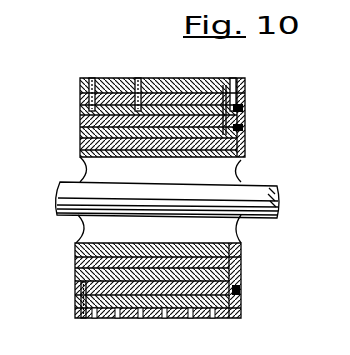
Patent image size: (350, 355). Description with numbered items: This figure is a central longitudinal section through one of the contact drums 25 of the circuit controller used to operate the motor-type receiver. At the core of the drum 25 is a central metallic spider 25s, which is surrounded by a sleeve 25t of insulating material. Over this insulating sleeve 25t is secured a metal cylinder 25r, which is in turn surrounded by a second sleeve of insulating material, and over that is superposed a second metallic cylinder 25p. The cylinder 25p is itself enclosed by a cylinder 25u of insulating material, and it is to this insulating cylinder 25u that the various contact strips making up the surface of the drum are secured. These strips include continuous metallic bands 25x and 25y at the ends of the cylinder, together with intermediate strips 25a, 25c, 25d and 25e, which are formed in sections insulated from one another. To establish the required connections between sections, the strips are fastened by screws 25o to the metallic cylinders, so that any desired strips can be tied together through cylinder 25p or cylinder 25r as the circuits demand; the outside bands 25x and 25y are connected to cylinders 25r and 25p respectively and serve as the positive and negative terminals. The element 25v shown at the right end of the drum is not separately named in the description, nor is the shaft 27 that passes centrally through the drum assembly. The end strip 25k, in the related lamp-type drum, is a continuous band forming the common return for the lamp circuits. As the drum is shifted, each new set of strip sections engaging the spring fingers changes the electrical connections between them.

The contact drum 25 is at (176, 280).
The intermediate contact strip 25a is at (214, 79).
The intermediate contact strip 25c is at (163, 73).
The intermediate contact strip 25d is at (139, 79).
The intermediate contact strip 25e is at (122, 73).
The end strip 25k is at (152, 331).
The screw 25o is at (92, 79).
The second metallic cylinder 25p is at (82, 113).
The metallic cylinder 25r is at (241, 127).
The central metallic spider 25s is at (82, 153).
The insulating sleeve 25t is at (82, 140).
The insulating cylinder 25u is at (224, 92).
The end block 25v is at (247, 104).
The end contact band 25x is at (246, 84).
The end contact band 25y is at (85, 79).
The shaft 27 is at (271, 194).